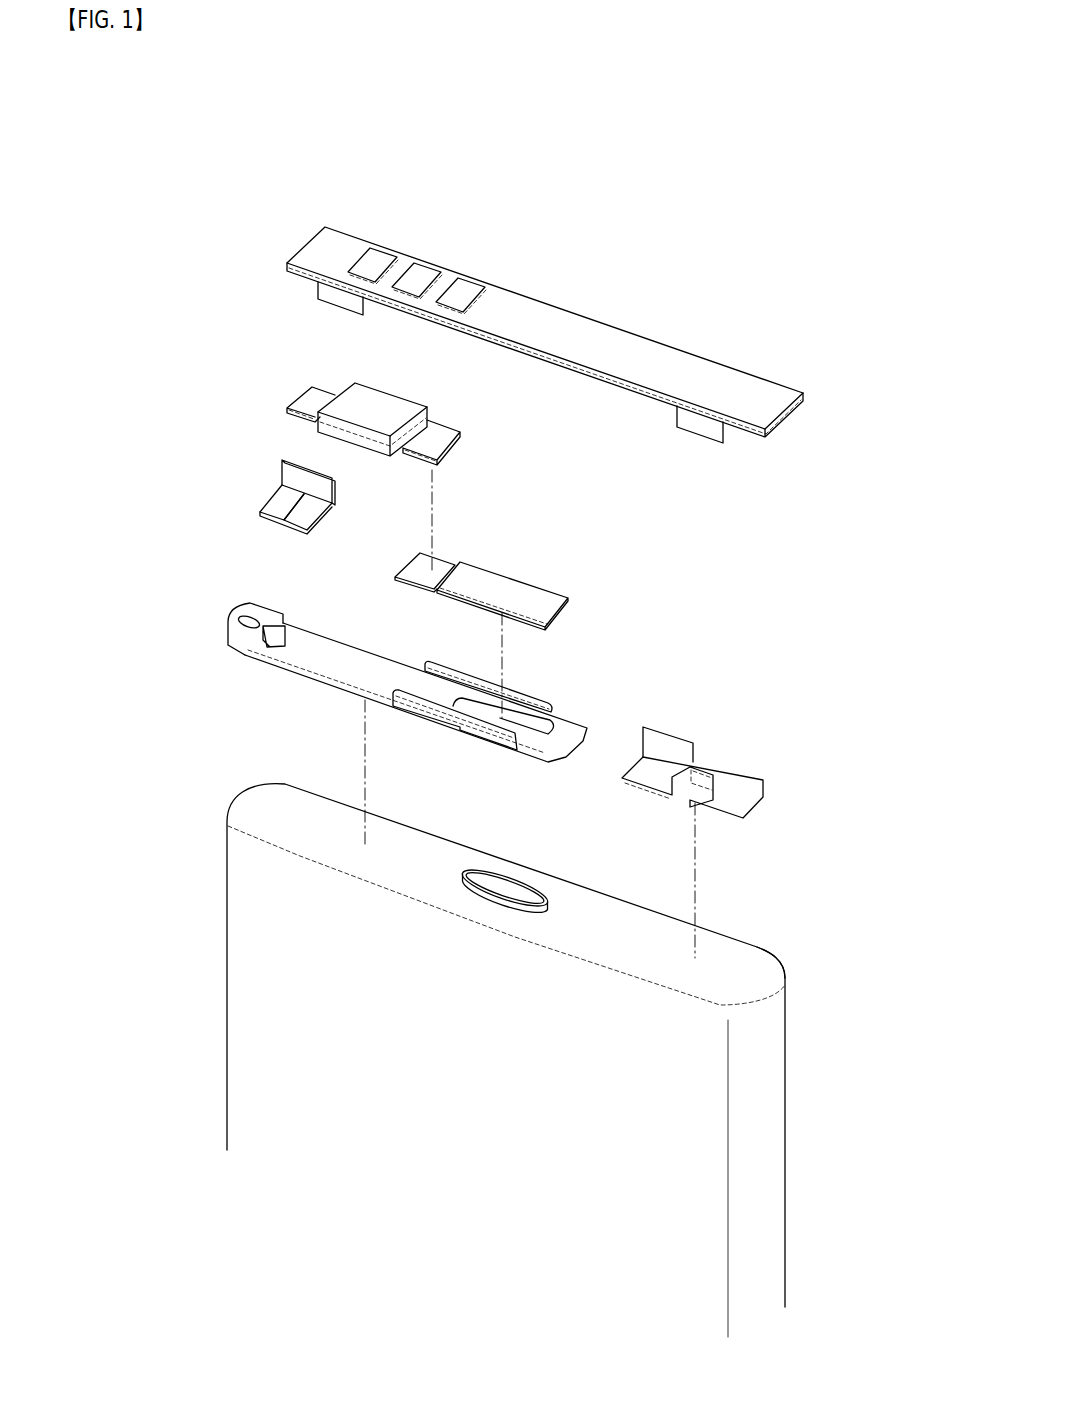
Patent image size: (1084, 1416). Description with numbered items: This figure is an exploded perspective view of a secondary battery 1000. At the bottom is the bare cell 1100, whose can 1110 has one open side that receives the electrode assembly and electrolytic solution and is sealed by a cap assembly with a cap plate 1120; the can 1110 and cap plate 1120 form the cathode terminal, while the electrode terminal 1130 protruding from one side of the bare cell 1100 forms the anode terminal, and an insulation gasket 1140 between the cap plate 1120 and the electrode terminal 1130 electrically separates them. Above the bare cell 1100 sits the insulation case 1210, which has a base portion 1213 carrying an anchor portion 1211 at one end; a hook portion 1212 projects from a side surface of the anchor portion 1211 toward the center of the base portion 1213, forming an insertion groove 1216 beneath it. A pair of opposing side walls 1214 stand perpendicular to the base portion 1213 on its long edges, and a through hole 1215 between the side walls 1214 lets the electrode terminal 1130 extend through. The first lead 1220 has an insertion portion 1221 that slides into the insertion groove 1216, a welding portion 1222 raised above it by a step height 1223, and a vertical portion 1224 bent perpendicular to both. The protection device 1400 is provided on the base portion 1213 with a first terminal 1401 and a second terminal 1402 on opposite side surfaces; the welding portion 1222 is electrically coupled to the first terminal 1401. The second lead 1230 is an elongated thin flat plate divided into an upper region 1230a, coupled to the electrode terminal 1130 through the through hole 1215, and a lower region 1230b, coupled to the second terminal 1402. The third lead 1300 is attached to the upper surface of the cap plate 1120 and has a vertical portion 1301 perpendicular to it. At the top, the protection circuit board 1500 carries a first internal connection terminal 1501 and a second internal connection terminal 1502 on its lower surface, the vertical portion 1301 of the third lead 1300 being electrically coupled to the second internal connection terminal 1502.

The secondary battery 1000 is at (758, 134).
The bare cell 1100 is at (801, 1091).
The can 1110 is at (786, 1172).
The cap plate 1120 is at (755, 956).
The electrode terminal 1130 is at (495, 873).
The insulation gasket 1140 is at (567, 877).
The insulation case 1210 is at (194, 670).
The anchor portion 1211 is at (228, 629).
The hook portion 1212 is at (283, 610).
The base portion 1213 is at (388, 653).
The side wall 1214 is at (518, 693).
The through hole 1215 is at (555, 716).
The insertion groove 1216 is at (265, 662).
The first lead 1220 is at (260, 473).
The insertion portion 1221 is at (286, 507).
The welding portion 1222 is at (318, 517).
The step height 1223 is at (270, 522).
The vertical portion 1224 is at (328, 489).
The second lead 1230 is at (512, 557).
The upper region 1230a is at (533, 598).
The lower region 1230b is at (433, 555).
The third lead 1300 is at (755, 752).
The vertical portion 1301 is at (665, 737).
The protection device 1400 is at (413, 361).
The first terminal 1401 is at (294, 393).
The second terminal 1402 is at (437, 437).
The protection circuit board 1500 is at (595, 295).
The first internal connection terminal 1501 is at (342, 297).
The second internal connection terminal 1502 is at (700, 427).